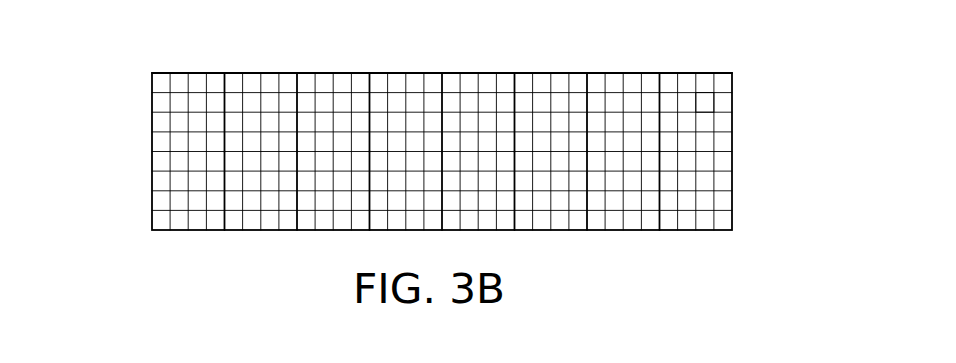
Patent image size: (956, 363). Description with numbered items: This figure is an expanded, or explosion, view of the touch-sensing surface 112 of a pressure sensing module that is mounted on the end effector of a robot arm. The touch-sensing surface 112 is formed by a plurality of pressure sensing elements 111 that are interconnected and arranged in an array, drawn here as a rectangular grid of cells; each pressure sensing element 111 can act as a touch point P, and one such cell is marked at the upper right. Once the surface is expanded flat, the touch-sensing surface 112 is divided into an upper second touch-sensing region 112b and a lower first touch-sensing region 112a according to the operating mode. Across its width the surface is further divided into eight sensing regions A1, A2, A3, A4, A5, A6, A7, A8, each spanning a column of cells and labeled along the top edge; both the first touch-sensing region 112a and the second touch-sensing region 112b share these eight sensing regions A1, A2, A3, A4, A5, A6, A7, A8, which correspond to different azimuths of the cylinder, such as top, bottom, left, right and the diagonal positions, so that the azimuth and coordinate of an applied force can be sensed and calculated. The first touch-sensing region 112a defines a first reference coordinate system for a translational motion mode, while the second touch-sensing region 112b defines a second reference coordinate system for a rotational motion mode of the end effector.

The pressure sensing element 111 is at (713, 96).
The touch-sensing surface 112 is at (431, 151).
The first touch-sensing region 112a is at (407, 191).
The second touch-sensing region 112b is at (457, 112).
The sensing region A1 is at (153, 76).
The sensing region A2 is at (226, 76).
The sensing region A3 is at (298, 76).
The sensing region A4 is at (370, 76).
The sensing region A5 is at (443, 76).
The sensing region A6 is at (516, 76).
The sensing region A7 is at (588, 76).
The sensing region A8 is at (660, 76).